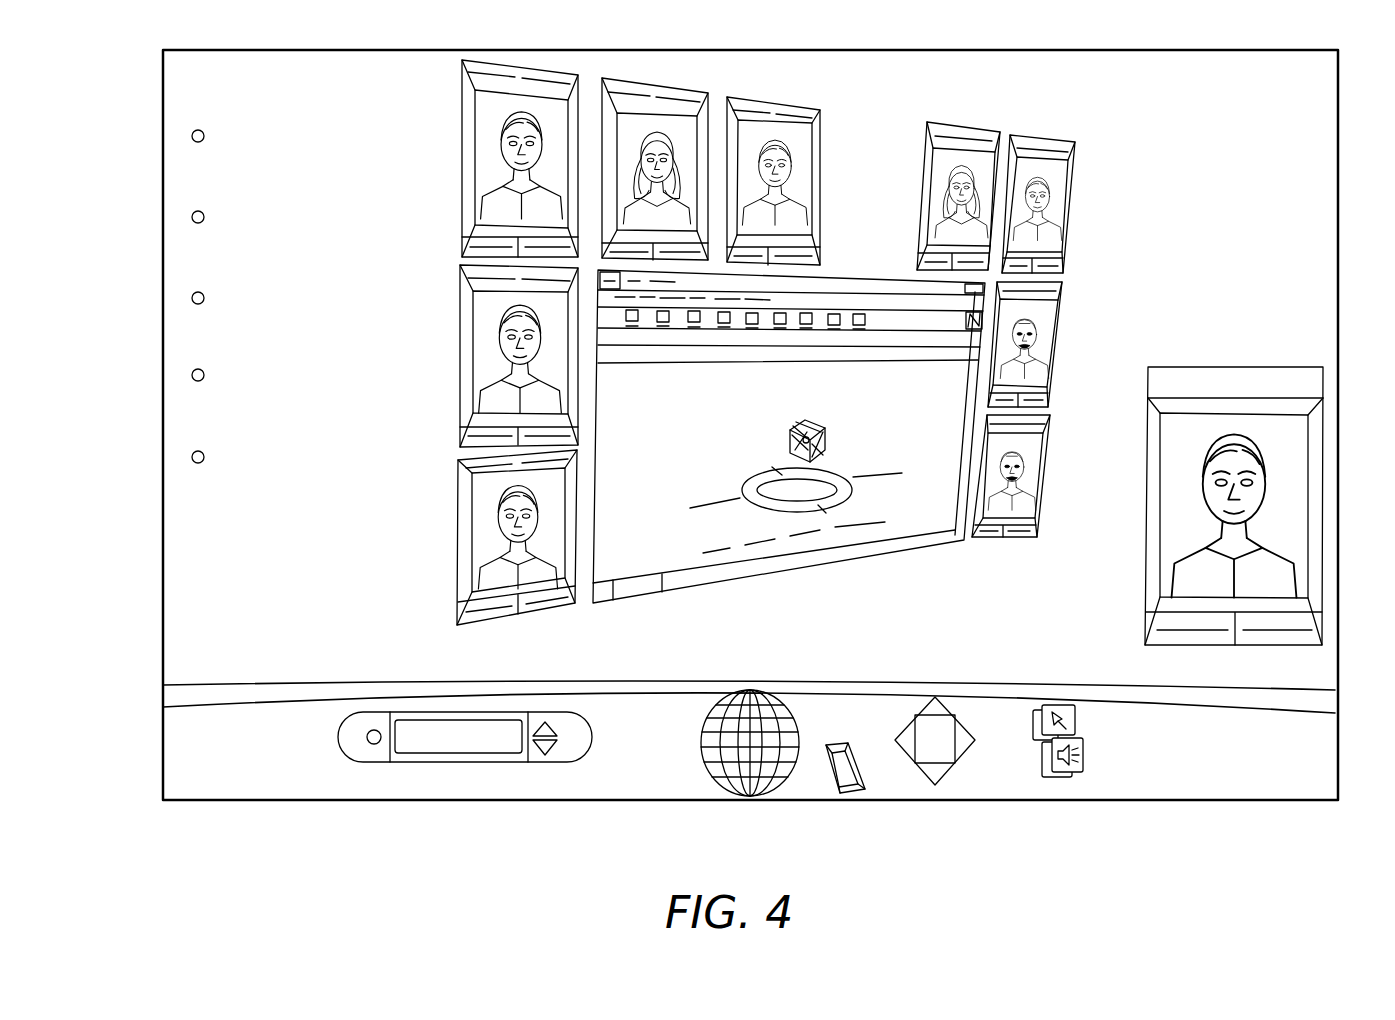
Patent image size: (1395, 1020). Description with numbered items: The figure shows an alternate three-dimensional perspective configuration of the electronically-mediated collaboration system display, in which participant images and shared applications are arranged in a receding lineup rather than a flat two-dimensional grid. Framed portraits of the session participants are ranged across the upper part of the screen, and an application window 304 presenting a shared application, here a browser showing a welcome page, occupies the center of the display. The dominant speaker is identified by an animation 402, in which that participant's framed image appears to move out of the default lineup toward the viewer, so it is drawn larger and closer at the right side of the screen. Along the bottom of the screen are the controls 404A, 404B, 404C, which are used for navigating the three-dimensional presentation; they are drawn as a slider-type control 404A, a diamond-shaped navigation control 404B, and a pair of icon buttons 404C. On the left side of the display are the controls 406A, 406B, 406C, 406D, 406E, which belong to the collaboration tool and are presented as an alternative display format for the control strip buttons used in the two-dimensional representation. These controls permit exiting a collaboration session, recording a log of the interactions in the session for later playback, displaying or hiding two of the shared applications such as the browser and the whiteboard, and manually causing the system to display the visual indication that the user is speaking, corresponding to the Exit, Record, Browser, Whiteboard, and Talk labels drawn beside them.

The control 406A is at (192, 136).
The control 406B is at (192, 217).
The control 406C is at (192, 298).
The control 406D is at (192, 375).
The control 406E is at (192, 457).
The animation 402 is at (1298, 440).
The application window 304 is at (649, 538).
The control 404A is at (465, 750).
The control 404B is at (948, 758).
The control 404C is at (1082, 757).